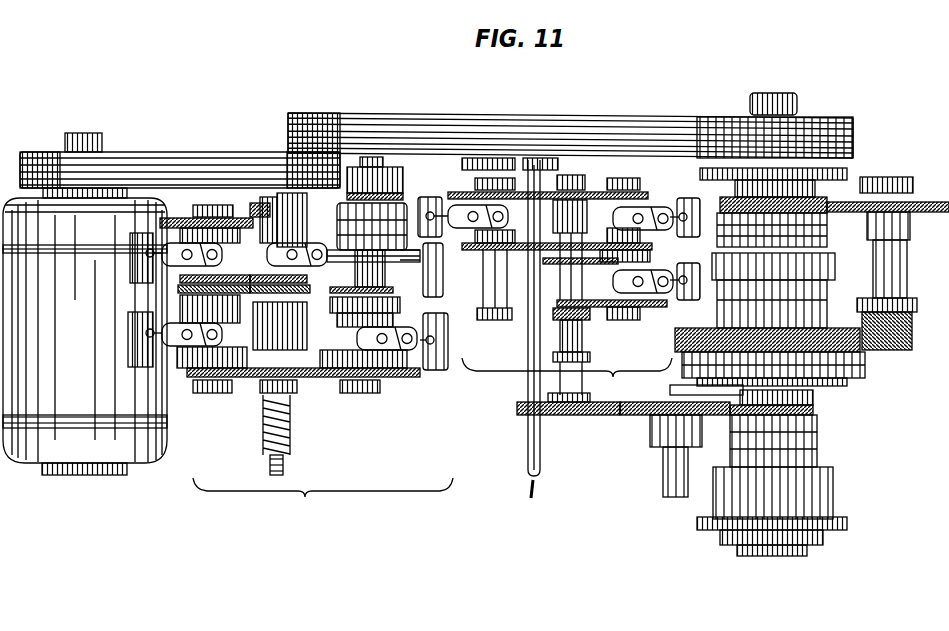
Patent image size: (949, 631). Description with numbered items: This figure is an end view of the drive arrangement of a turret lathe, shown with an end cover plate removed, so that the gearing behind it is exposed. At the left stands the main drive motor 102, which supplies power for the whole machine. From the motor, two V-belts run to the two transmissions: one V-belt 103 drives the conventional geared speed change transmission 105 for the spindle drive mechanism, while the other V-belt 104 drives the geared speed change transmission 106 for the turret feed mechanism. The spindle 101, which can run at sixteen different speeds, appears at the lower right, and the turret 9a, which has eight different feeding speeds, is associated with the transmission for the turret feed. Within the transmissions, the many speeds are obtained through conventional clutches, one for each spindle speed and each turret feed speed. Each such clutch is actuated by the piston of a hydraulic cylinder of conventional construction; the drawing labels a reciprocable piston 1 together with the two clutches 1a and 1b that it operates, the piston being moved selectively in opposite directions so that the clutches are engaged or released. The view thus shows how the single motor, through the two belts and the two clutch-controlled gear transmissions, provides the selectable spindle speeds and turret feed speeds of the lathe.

The reciprocable piston 1 is at (132, 263).
The clutch 1a is at (222, 215).
The clutch 1b is at (195, 228).
The turret 9a is at (538, 478).
The spindle 101 is at (790, 556).
The main drive motor 102 is at (45, 465).
The V-belt 103 is at (180, 178).
The V-belt 104 is at (543, 140).
The geared speed change transmission 105 is at (306, 341).
The geared speed change transmission 106 is at (560, 286).